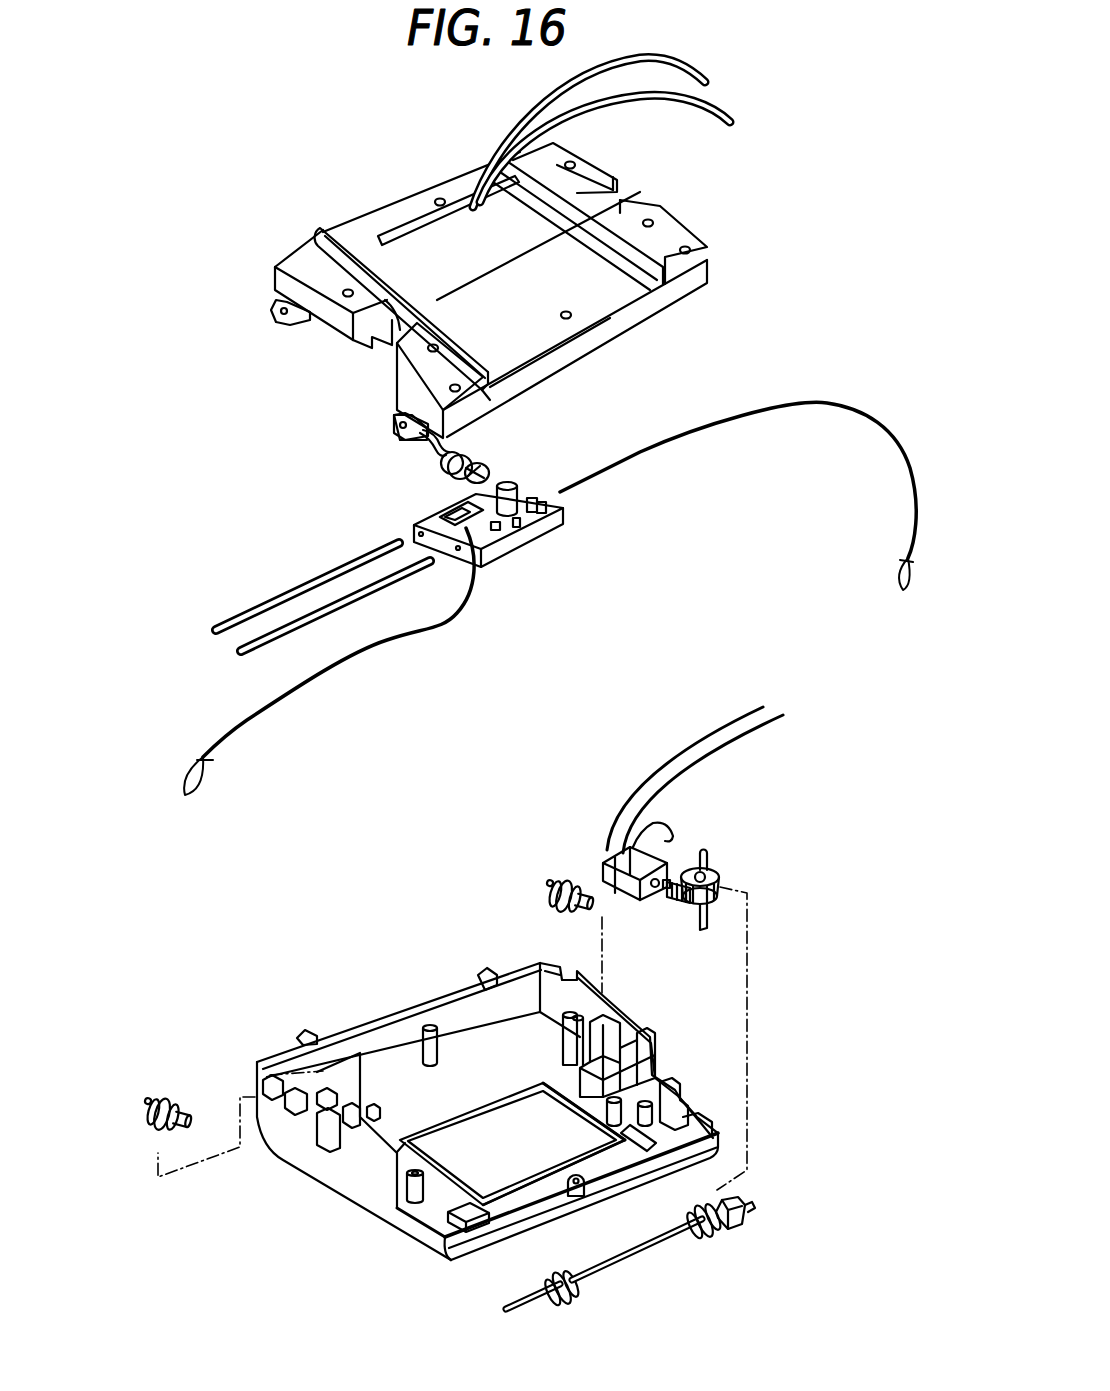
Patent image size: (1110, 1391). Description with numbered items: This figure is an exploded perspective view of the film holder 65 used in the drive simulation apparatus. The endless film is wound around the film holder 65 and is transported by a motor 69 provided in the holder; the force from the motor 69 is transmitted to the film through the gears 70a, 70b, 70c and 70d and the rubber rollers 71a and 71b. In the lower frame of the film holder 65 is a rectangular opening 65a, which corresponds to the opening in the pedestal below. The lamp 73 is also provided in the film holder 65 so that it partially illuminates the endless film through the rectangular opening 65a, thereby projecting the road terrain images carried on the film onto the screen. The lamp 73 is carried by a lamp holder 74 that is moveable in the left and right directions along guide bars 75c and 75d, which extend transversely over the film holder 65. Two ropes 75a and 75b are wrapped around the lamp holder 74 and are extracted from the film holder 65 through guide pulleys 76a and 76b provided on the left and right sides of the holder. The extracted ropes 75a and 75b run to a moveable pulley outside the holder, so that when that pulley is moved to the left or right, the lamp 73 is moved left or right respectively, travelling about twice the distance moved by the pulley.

The film holder 65 is at (690, 236).
The rectangular opening 65a is at (401, 1223).
The motor 69 is at (627, 900).
The gear 70a is at (692, 912).
The gear 70b is at (708, 852).
The gear 70c is at (710, 918).
The gear 70d is at (752, 1222).
The rubber roller 71a is at (557, 1272).
The rubber roller 71b is at (723, 1236).
The lamp 73 is at (490, 464).
The lamp holder 74 is at (493, 553).
The rope 75a is at (677, 436).
The rope 75b is at (434, 620).
The guide bar 75c is at (327, 568).
The guide bar 75d is at (374, 594).
The guide pulley 76a is at (558, 910).
The guide pulley 76b is at (201, 1081).